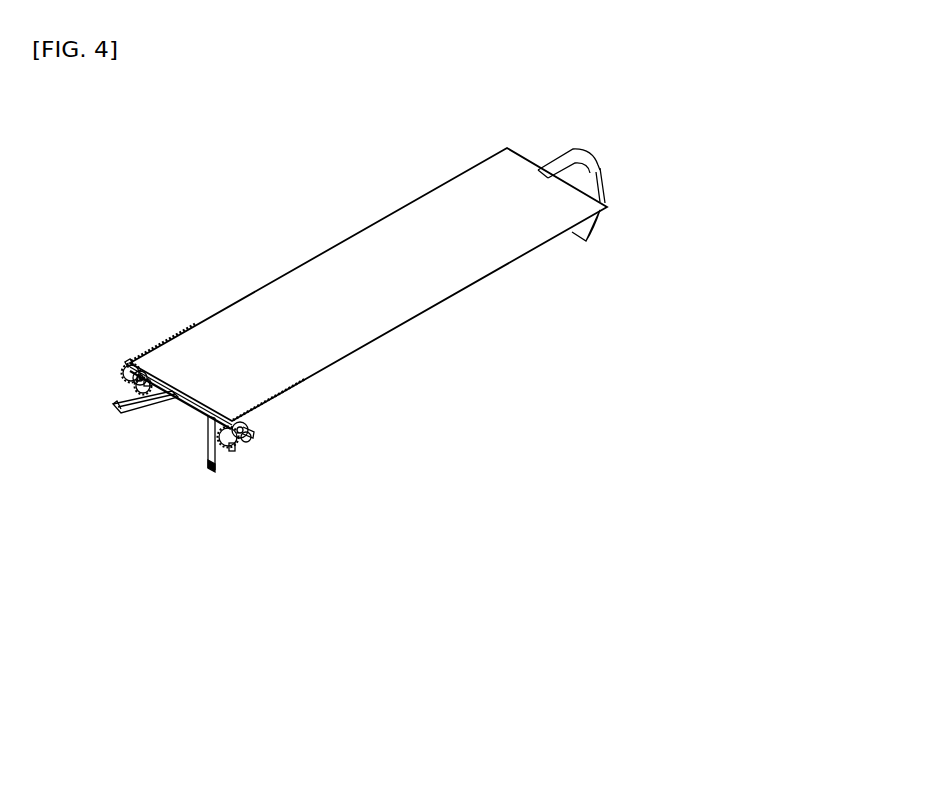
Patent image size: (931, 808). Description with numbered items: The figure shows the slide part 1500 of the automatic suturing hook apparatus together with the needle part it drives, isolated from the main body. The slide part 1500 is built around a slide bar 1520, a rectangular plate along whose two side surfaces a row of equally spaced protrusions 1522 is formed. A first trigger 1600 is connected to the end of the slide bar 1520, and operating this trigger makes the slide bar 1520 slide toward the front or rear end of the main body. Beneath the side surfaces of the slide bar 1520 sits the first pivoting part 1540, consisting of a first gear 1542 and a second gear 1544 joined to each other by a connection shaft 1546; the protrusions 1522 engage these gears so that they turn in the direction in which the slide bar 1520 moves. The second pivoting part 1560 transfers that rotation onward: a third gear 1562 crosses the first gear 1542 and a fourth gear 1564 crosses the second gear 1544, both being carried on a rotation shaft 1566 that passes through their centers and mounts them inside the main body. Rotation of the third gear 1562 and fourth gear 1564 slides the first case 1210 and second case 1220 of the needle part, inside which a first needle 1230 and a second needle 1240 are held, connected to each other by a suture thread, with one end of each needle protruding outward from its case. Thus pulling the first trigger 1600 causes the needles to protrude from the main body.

The slide part 1500 is at (585, 630).
The slide bar 1520 is at (480, 252).
The protrusions 1522 is at (157, 347).
The first pivoting part 1540 is at (415, 413).
The first gear 1542 is at (150, 388).
The second gear 1544 is at (254, 432).
The connection shaft 1546 is at (235, 450).
The second pivoting part 1560 is at (338, 572).
The third gear 1562 is at (143, 417).
The fourth gear 1564 is at (228, 453).
The rotation shaft 1566 is at (125, 405).
The first trigger 1600 is at (598, 157).
The first case 1210 is at (128, 385).
The second case 1220 is at (207, 432).
The first needle 1230 is at (112, 408).
The second needle 1240 is at (210, 470).